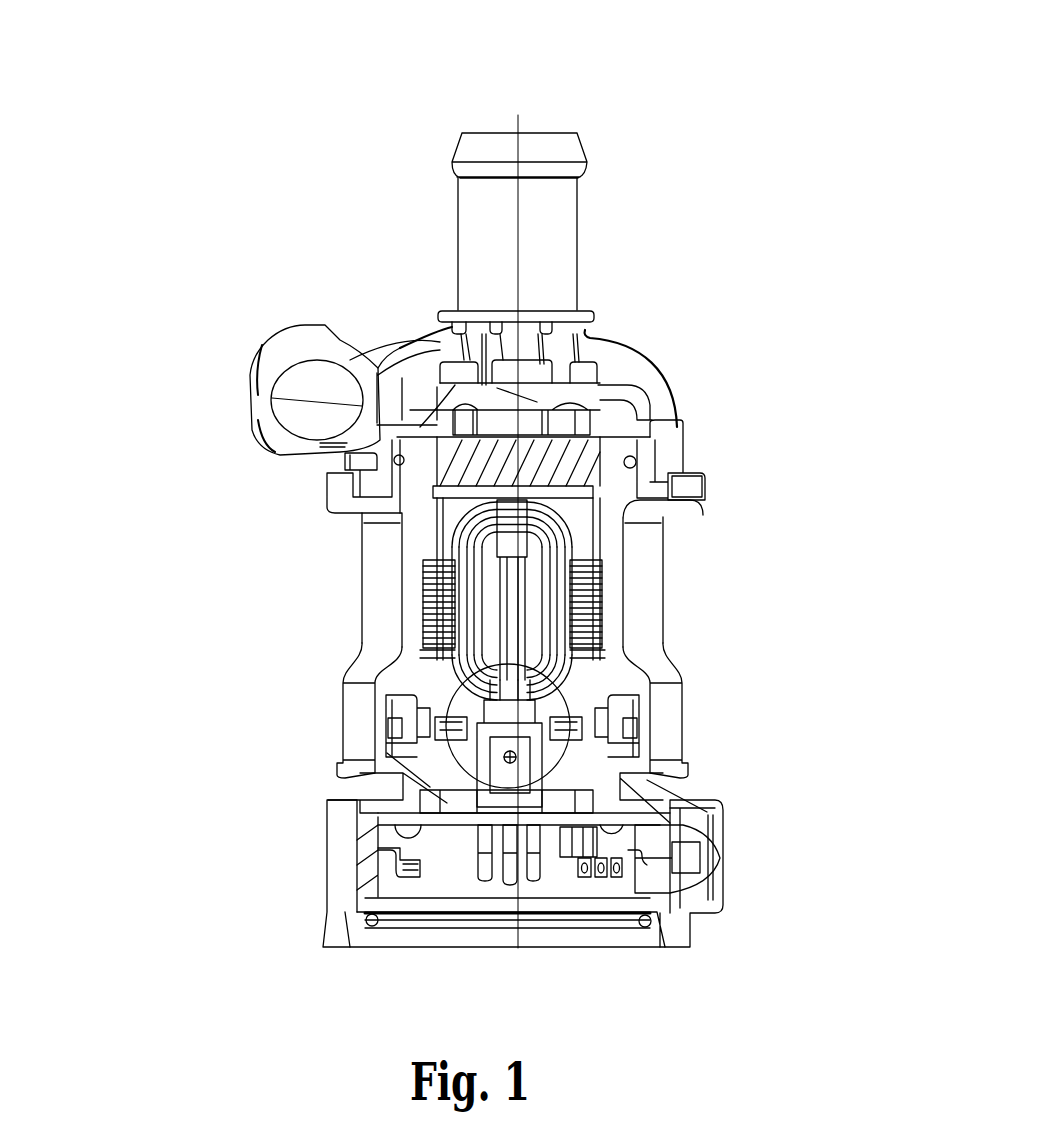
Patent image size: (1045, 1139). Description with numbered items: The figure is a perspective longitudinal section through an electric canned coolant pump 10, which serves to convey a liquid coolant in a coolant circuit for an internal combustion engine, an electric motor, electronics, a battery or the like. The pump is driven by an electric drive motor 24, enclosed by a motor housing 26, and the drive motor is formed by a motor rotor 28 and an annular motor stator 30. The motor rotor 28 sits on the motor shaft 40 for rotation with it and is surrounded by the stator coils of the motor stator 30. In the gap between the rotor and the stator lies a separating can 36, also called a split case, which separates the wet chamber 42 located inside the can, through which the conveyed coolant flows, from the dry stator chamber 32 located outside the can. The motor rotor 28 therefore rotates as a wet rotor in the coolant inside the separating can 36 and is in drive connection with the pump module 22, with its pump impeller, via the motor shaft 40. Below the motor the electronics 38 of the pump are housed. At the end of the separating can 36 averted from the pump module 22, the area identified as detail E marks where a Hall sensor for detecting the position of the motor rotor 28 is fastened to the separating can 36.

The electric canned coolant pump 10 is at (646, 117).
The pump module 22 is at (226, 379).
The electric drive motor 24 is at (195, 641).
The motor housing 26 is at (688, 486).
The motor rotor 28 is at (600, 542).
The motor stator 30 is at (600, 587).
The dry chamber 32 is at (600, 653).
The detail E is at (610, 718).
The separating can 36 is at (413, 677).
The electronics 38 is at (312, 855).
The motor shaft 40 is at (435, 597).
The wet chamber 42 is at (450, 518).